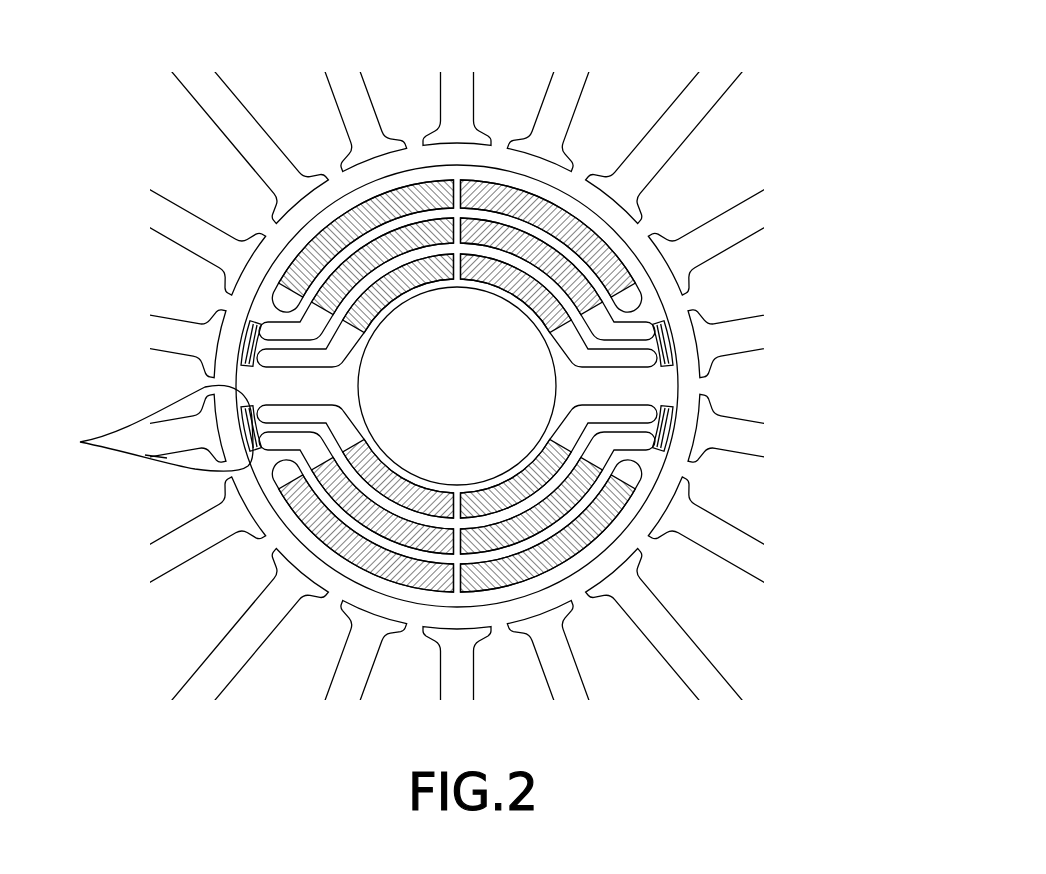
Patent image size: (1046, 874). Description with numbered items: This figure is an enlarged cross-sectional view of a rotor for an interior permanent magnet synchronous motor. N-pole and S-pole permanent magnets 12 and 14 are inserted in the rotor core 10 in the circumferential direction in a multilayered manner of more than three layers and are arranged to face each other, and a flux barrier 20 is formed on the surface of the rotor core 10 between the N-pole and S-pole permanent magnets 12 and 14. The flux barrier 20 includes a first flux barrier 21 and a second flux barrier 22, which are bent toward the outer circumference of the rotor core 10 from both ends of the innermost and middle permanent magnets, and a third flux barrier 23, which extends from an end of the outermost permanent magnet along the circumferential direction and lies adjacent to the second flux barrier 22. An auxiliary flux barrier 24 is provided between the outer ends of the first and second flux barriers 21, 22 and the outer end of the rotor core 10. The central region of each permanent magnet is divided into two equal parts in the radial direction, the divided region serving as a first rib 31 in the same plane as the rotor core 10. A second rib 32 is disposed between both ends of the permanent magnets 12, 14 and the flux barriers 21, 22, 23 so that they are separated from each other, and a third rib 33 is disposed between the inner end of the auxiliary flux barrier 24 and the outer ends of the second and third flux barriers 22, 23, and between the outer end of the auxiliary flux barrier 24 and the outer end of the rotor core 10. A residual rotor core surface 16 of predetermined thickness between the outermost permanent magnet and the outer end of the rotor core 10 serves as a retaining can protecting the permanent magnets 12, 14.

The rotor core 10 is at (566, 192).
The N-pole permanent magnet 12 is at (493, 187).
The S-pole permanent magnet 14 is at (493, 587).
The residual rotor core surface 16 is at (620, 247).
The flux barrier 20 is at (657, 318).
The first flux barrier 21 is at (638, 362).
The second flux barrier 22 is at (645, 332).
The third flux barrier 23 is at (637, 300).
The auxiliary flux barrier 24 is at (670, 357).
The first rib 31 is at (459, 184).
The second rib 32 is at (80, 442).
The third rib 33 is at (248, 343).